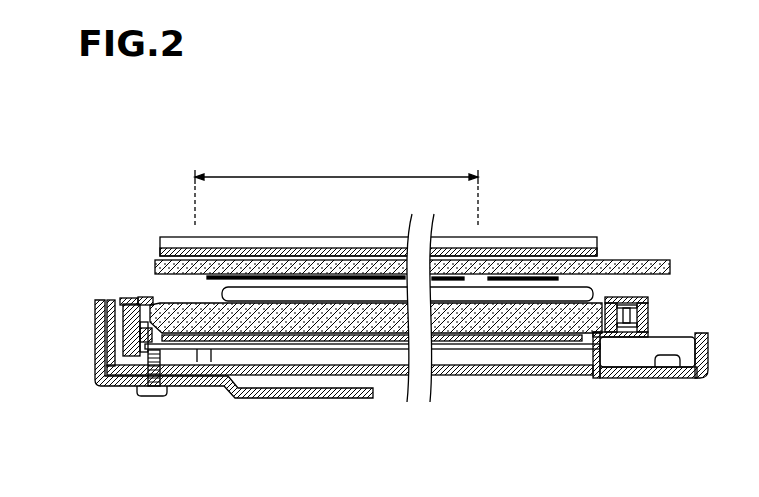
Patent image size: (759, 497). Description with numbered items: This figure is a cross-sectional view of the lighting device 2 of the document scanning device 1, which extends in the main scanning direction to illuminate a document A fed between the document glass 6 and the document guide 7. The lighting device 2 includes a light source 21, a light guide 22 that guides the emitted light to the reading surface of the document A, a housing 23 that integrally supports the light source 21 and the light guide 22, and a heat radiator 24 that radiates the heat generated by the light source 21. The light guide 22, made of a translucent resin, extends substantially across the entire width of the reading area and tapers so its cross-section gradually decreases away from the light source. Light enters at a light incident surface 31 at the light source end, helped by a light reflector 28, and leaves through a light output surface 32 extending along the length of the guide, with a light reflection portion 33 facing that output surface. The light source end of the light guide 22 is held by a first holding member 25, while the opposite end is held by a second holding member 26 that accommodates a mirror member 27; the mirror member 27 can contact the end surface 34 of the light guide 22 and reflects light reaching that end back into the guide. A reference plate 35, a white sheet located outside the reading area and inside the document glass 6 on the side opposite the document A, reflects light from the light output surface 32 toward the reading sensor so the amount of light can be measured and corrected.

The document scanning device 1 is at (380, 293).
The lighting device 2 is at (407, 386).
The document glass 6 is at (627, 260).
The document guide 7 is at (528, 237).
The light source 21 is at (97, 311).
The light guide 22 is at (309, 336).
The housing 23 is at (491, 382).
The heat radiator 24 is at (201, 392).
The first holding member 25 is at (139, 300).
The second holding member 26 is at (649, 312).
The mirror member 27 is at (614, 300).
The light reflector 28 is at (111, 301).
The light incident surface 31 is at (149, 303).
The light output surface 32 is at (237, 302).
The light reflection portion 33 is at (257, 344).
The end surface 34 is at (617, 322).
The reference plate 35 is at (505, 281).
The document A is at (309, 247).